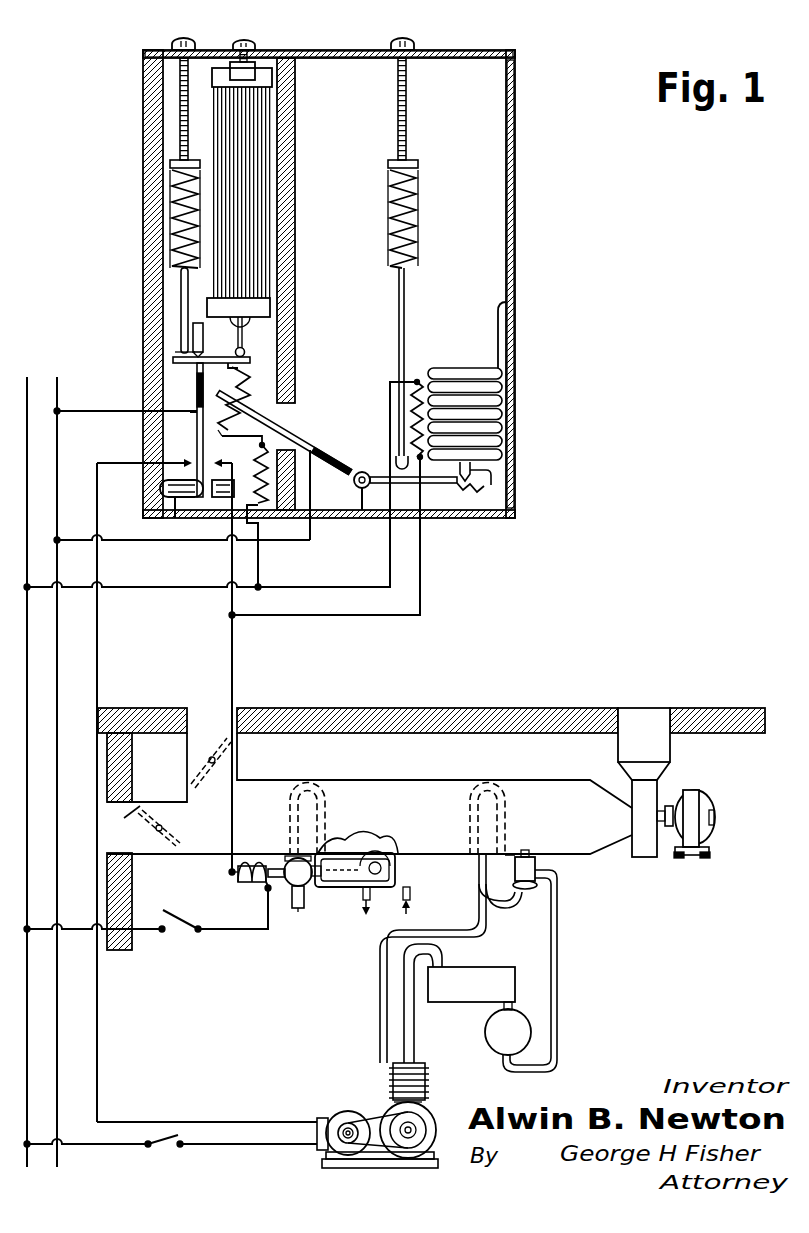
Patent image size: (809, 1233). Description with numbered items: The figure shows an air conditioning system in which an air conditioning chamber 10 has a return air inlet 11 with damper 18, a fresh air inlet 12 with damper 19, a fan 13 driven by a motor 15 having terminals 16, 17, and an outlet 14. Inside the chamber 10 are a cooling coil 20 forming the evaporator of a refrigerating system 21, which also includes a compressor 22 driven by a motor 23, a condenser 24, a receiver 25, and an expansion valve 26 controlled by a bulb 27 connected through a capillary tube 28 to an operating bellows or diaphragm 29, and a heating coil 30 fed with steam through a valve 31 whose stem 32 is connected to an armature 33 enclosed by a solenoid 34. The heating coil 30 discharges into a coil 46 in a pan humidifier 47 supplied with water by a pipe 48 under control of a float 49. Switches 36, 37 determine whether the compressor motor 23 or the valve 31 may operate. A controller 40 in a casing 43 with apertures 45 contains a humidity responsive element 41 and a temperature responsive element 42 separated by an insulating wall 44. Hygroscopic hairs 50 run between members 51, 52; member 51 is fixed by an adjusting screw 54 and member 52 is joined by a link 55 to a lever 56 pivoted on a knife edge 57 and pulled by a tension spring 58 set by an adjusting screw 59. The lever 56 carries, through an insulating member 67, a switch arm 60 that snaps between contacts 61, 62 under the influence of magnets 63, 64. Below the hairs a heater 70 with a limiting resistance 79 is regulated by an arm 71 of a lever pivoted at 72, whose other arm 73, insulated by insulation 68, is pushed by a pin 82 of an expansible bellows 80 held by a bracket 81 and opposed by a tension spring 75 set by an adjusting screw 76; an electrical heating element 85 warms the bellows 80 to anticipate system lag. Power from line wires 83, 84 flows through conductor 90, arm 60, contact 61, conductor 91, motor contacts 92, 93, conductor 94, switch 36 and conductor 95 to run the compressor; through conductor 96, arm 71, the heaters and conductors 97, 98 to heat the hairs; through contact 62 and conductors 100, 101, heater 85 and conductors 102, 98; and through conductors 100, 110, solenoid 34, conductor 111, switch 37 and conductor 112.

The air conditioning chamber 10 is at (394, 774).
The return air inlet 11 is at (204, 706).
The fresh air inlet 12 is at (126, 815).
The fan 13 is at (647, 858).
The outlet 14 is at (646, 712).
The motor 15 is at (706, 807).
The terminal 16 is at (680, 860).
The terminal 17 is at (706, 860).
The damper 18 is at (213, 779).
The damper 19 is at (170, 829).
The cooling coil 20 is at (504, 833).
The refrigerating system 21 is at (570, 972).
The compressor 22 is at (435, 1112).
The motor 23 is at (353, 1111).
The condenser 24 is at (463, 1003).
The receiver 25 is at (488, 1038).
The expansion valve 26 is at (540, 872).
The bulb 27 is at (478, 881).
The capillary tube 28 is at (500, 906).
The operating bellows or diaphragm 29 is at (528, 891).
The heating coil 30 is at (326, 790).
The valve 31 is at (298, 915).
The stem 32 is at (291, 914).
The armature 33 is at (232, 882).
The solenoid 34 is at (247, 889).
The switch 36 is at (169, 1147).
The switch 37 is at (181, 931).
The controller 40 is at (522, 163).
The humidity responsive element 41 is at (284, 106).
The temperature responsive element 42 is at (445, 345).
The casing 43 is at (516, 456).
The wall 44 is at (292, 336).
The apertures 45 is at (456, 56).
The coil 46 is at (340, 880).
The pan humidifier 47 is at (372, 890).
The pipe 48 is at (411, 887).
The float 49 is at (373, 861).
The hygroscopic hairs 50 is at (246, 212).
The member 51 is at (236, 74).
The member 52 is at (256, 304).
The adjusting screw 54 is at (246, 46).
The link 55 is at (244, 332).
The lever 56 is at (236, 366).
The knife edge 57 is at (204, 345).
The tension spring 58 is at (187, 272).
The adjusting screw 59 is at (188, 137).
The switch arm 60 is at (197, 428).
The contact 61 is at (192, 470).
The contact 62 is at (218, 462).
The magnet 63 is at (175, 518).
The magnet 64 is at (258, 478).
The electrical insulating member 67 is at (197, 390).
The insulation 68 is at (361, 472).
The heater 70 is at (238, 387).
The arm 71 is at (290, 422).
The pivot 72 is at (358, 487).
The arm 73 is at (456, 485).
The tension spring 75 is at (420, 236).
The adjusting screw 76 is at (407, 143).
The limiting resistance 79 is at (262, 436).
The expansible bellows 80 is at (504, 402).
The bracket 81 is at (497, 332).
The pin 82 is at (490, 484).
The line wire 83 is at (58, 782).
The line wire 84 is at (28, 760).
The electrical heating element 85 is at (410, 380).
The conductor 90 is at (113, 411).
The conductor 91 is at (97, 494).
The contact 92 is at (311, 1122).
The contact 93 is at (313, 1147).
The conductor 94 is at (238, 1147).
The conductor 95 is at (93, 1147).
The conductor 96 is at (173, 541).
The conductor 97 is at (259, 565).
The conductor 98 is at (163, 589).
The conductor 100 is at (232, 562).
The conductor 101 is at (362, 616).
The conductor 102 is at (350, 586).
The conductor 110 is at (222, 674).
The conductor 111 is at (240, 936).
The conductor 112 is at (71, 930).